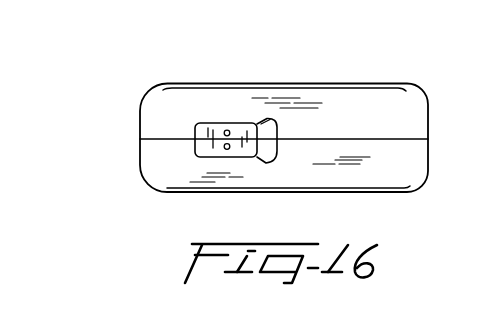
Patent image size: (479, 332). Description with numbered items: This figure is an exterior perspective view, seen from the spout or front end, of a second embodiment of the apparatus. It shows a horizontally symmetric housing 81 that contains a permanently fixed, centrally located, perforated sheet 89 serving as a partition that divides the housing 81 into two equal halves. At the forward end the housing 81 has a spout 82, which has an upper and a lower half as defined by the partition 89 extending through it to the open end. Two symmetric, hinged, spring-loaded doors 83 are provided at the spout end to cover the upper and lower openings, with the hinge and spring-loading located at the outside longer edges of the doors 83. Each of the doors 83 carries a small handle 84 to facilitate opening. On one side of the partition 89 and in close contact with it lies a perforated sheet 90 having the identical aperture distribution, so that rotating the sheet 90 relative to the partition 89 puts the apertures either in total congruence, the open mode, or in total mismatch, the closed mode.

The housing 81 is at (428, 155).
The spout 82 is at (267, 152).
The doors 83 is at (211, 130).
The handle 84 is at (231, 132).
The perforated sheet 89 is at (365, 139).
The perforated sheet 90 is at (390, 139).